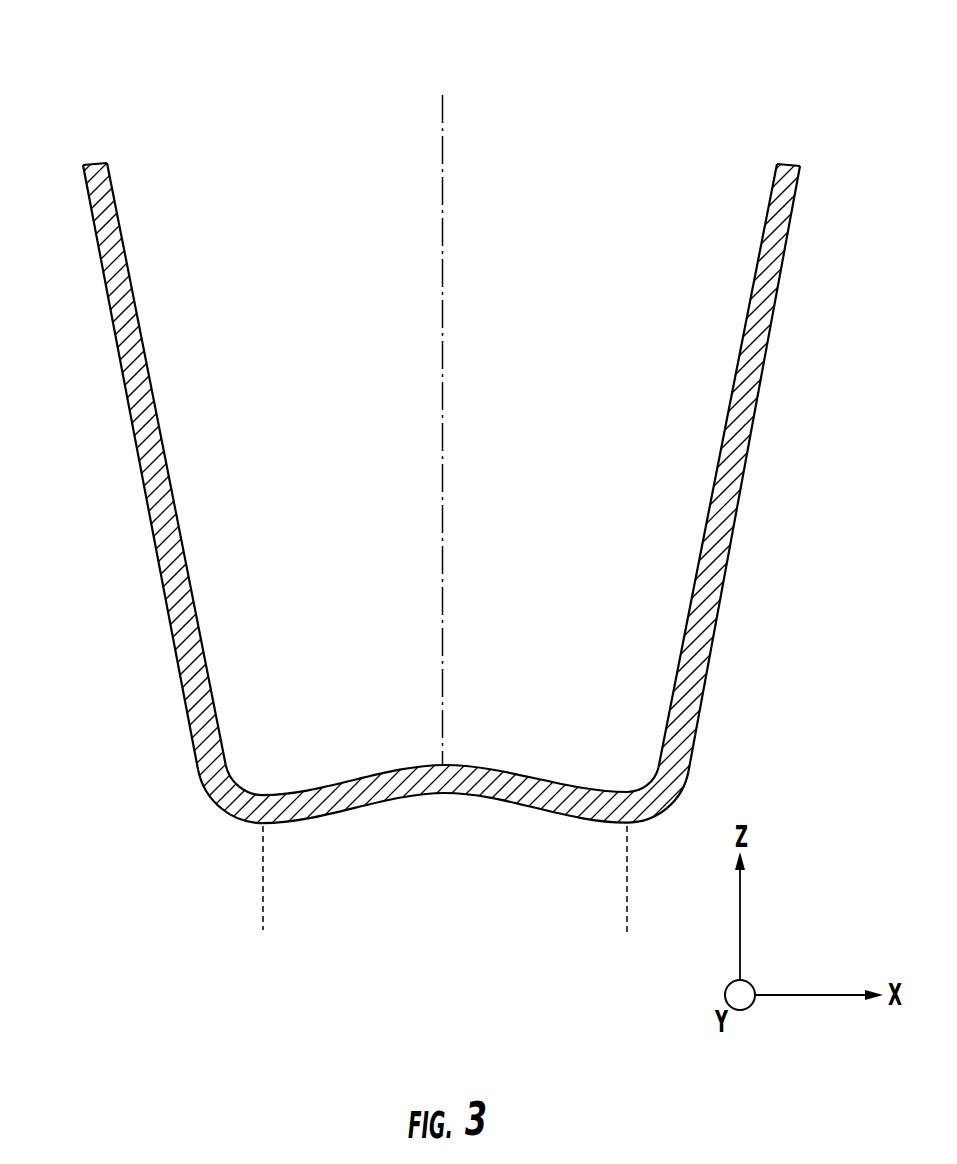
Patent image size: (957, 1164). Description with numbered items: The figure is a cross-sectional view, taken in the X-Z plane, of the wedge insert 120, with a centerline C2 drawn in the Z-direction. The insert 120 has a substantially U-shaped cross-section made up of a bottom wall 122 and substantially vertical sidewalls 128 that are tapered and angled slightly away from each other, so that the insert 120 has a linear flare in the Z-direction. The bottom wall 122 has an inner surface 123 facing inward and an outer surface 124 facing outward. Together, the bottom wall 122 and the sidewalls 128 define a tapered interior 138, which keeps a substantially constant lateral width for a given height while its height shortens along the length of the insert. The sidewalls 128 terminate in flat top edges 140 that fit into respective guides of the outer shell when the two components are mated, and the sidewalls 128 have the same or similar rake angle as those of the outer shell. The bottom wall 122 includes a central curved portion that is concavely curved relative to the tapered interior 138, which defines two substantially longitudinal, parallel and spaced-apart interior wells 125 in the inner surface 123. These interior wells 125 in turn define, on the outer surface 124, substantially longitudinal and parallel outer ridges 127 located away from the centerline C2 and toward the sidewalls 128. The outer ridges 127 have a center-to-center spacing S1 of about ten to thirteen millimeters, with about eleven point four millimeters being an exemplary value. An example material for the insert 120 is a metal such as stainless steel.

The wedge insert 120 is at (262, 73).
The bottom wall 122 is at (347, 792).
The inner surface 123 is at (576, 789).
The outer surface 124 is at (410, 795).
The interior wells 125 is at (263, 787).
The outer ridges 127 is at (263, 823).
The sidewalls 128 is at (122, 383).
The tapered interior 138 is at (693, 310).
The flat top edges 140 is at (93, 163).
The centerline C2 is at (441, 257).
The center-to-center spacing S1 is at (627, 898).